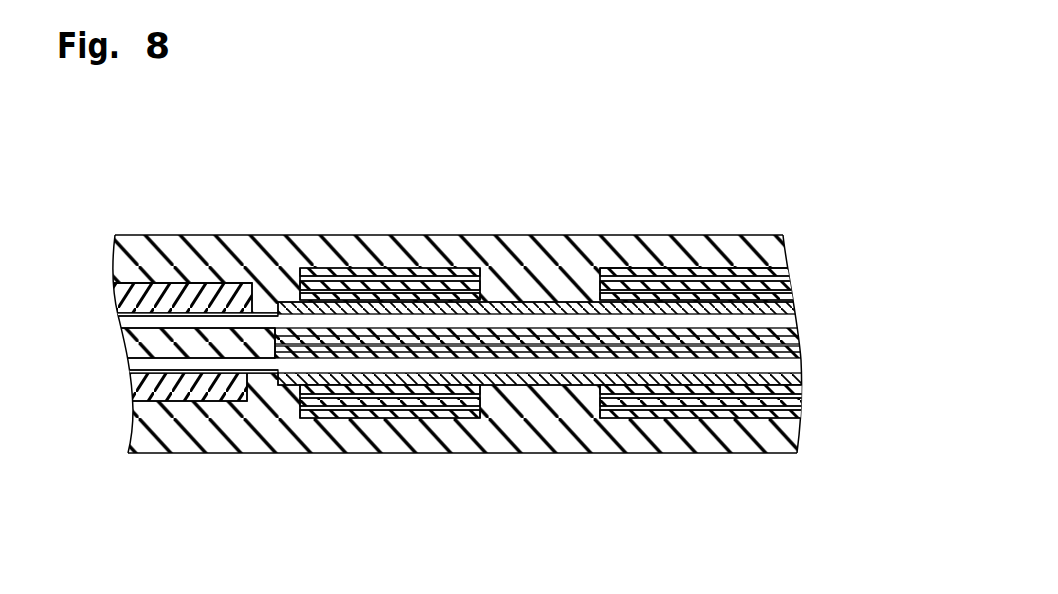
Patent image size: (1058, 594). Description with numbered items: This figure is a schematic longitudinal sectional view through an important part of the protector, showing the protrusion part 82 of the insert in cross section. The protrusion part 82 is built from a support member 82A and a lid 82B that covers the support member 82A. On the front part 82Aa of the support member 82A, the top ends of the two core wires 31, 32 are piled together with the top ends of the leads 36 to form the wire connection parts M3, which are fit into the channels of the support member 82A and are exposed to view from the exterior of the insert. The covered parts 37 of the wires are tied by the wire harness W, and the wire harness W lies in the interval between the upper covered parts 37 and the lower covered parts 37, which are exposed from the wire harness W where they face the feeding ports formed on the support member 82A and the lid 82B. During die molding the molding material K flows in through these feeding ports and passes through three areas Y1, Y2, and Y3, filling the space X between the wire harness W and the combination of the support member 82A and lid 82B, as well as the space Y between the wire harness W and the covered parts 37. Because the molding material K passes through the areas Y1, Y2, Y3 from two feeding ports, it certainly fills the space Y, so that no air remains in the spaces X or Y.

The protrusion part 82 is at (457, 344).
The support member 82A is at (392, 428).
The front part 82Aa is at (130, 283).
The lid 82B is at (392, 262).
The core wire 31 is at (147, 298).
The core wire 32 is at (146, 390).
The lead 36 is at (256, 320).
The covered part 37 is at (556, 306).
The wire connection part M3 is at (205, 314).
The wire harness W is at (369, 292).
The space X is at (356, 275).
The space Y is at (442, 290).
The molding material K is at (652, 240).
The area Y1 is at (300, 280).
The area Y2 is at (486, 305).
The area Y3 is at (598, 295).